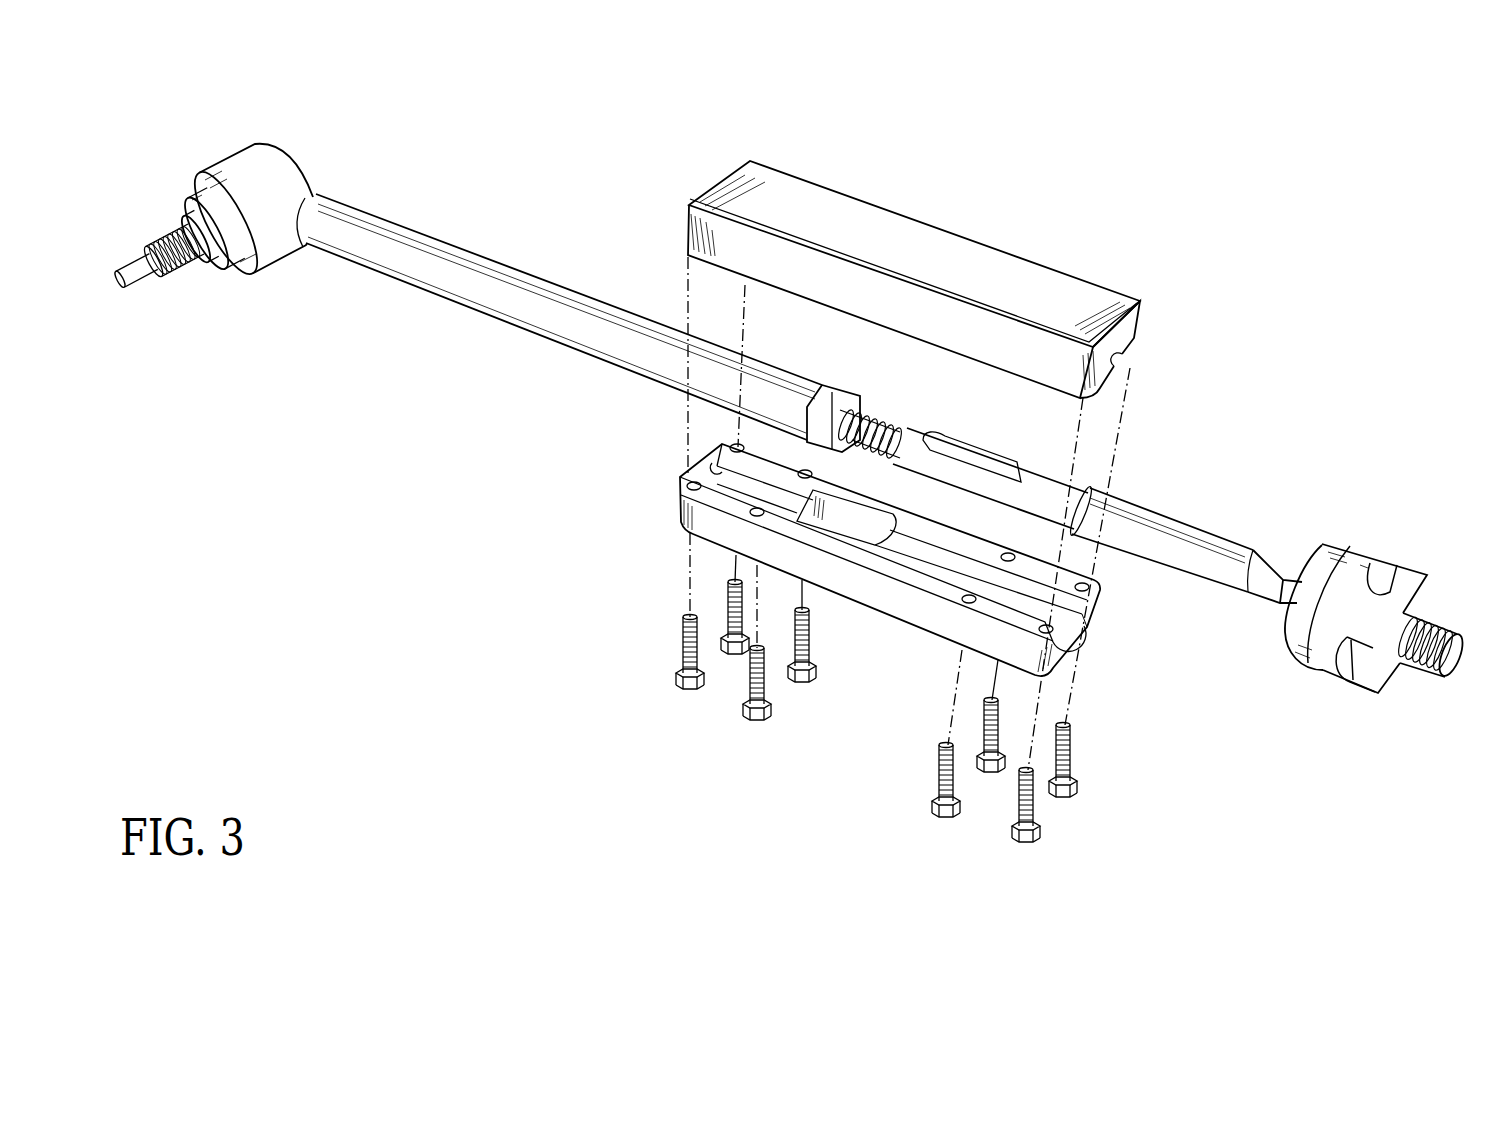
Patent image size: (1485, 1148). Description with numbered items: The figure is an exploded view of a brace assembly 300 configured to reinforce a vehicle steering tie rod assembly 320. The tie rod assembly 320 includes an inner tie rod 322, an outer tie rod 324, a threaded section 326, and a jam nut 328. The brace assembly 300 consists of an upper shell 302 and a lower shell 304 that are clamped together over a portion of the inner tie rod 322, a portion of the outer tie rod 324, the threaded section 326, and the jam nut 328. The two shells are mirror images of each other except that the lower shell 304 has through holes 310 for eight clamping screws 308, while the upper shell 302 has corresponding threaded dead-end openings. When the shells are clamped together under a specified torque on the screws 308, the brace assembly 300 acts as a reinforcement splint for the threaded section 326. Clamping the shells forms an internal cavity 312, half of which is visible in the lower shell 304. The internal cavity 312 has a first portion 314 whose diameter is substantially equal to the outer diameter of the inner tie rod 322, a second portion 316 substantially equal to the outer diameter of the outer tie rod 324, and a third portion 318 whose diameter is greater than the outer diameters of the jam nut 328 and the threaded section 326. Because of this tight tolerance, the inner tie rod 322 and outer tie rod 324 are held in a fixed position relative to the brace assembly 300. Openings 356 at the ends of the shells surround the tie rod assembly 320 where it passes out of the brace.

The brace assembly 300 is at (1137, 228).
The upper shell 302 is at (1137, 332).
The lower shell 304 is at (1060, 660).
The screws 308 is at (1077, 790).
The through holes 310 is at (680, 481).
The internal cavity 312 is at (1082, 610).
The first portion 314 is at (985, 581).
The second portion 316 is at (782, 501).
The third portion 318 is at (880, 535).
The vehicle steering tie rod assembly 320 is at (1212, 510).
The inner tie rod 322 is at (1225, 580).
The outer tie rod 324 is at (478, 297).
The threaded section 326 is at (876, 421).
The jam nut 328 is at (805, 433).
The openings 356 is at (718, 468).